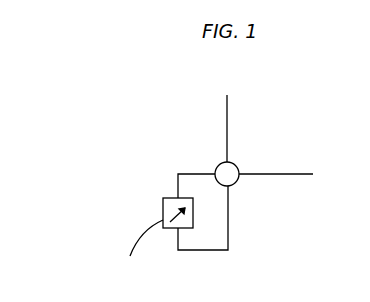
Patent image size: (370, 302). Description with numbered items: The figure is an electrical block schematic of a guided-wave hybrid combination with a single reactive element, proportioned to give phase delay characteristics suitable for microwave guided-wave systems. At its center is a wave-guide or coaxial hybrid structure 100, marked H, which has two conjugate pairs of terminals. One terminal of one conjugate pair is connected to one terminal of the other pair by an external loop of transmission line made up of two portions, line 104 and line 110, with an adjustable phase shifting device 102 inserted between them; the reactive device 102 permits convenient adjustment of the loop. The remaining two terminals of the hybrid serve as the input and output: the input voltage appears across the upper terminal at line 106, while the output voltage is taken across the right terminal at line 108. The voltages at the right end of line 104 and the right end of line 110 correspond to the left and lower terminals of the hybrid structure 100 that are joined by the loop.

The hybrid structure 100 is at (237, 182).
The adjustable phase shifting device 102 is at (163, 213).
The transmission line 104 is at (200, 172).
The upper terminal line 106 is at (229, 113).
The right terminal line 108 is at (277, 173).
The transmission line 110 is at (190, 252).